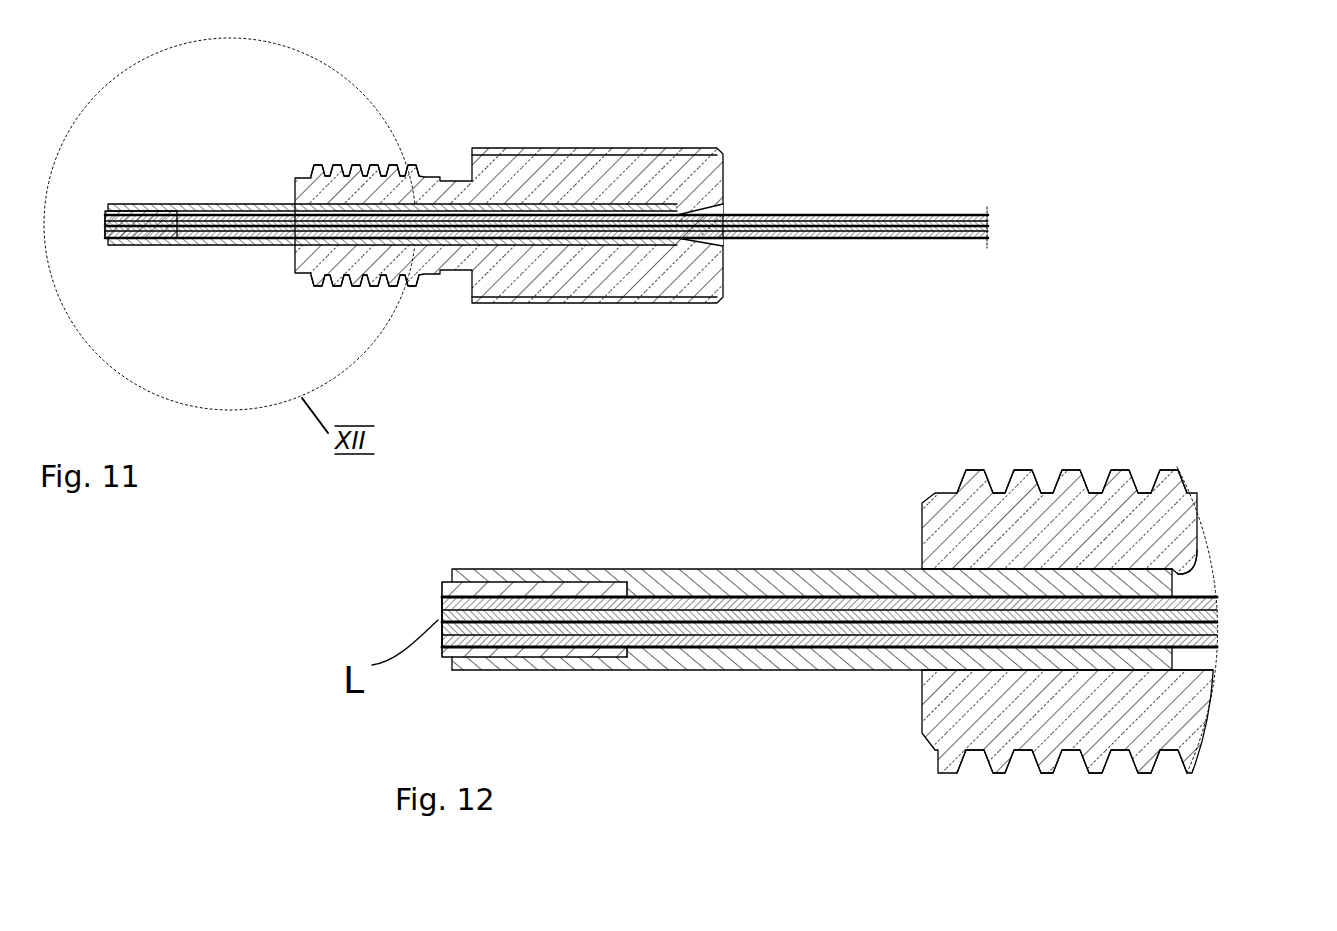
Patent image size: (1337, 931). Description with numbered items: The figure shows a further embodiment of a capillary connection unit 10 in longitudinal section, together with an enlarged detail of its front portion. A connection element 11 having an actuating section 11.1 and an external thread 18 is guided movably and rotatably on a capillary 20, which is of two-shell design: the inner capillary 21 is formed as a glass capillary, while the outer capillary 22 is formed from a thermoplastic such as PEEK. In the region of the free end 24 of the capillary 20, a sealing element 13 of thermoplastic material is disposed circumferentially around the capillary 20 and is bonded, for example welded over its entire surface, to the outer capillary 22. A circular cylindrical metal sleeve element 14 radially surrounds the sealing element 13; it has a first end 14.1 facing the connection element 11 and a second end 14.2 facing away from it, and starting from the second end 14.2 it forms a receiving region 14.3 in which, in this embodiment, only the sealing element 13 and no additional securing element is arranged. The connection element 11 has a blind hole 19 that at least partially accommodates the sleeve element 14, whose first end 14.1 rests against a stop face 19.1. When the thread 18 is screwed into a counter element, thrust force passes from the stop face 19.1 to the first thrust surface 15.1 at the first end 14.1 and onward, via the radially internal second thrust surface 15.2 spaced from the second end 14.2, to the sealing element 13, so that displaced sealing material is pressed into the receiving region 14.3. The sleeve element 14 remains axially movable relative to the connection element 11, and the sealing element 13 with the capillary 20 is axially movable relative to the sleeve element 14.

In FIG. 11, the capillary connection unit 10 is at (692, 53).
In FIG. 11, the connection element 11 is at (570, 148).
In FIG. 12, the connection element 11 is at (935, 503).
In FIG. 11, the actuating section 11.1 is at (715, 312).
In FIG. 11, the thread 18 is at (418, 166).
In FIG. 12, the thread 18 is at (1127, 468).
In FIG. 11, the capillary 20 is at (799, 215).
In FIG. 12, the capillary 20 is at (1216, 597).
In FIG. 12, the sealing element 13 is at (540, 590).
In FIG. 12, the metal sleeve element 14 is at (812, 567).
In FIG. 12, the first end 14.1 is at (1170, 655).
In FIG. 12, the second end 14.2 is at (450, 661).
In FIG. 12, the receiving region 14.3 is at (543, 673).
In FIG. 12, the first thrust surface 15.1 is at (1183, 568).
In FIG. 12, the second thrust surface 15.2 is at (620, 590).
In FIG. 12, the blind hole 19 is at (1043, 673).
In FIG. 12, the stop face 19.1 is at (1165, 658).
In FIG. 12, the inner capillary 21 is at (1220, 618).
In FIG. 12, the outer capillary 22 is at (1222, 600).
In FIG. 12, the free end 24 is at (440, 613).